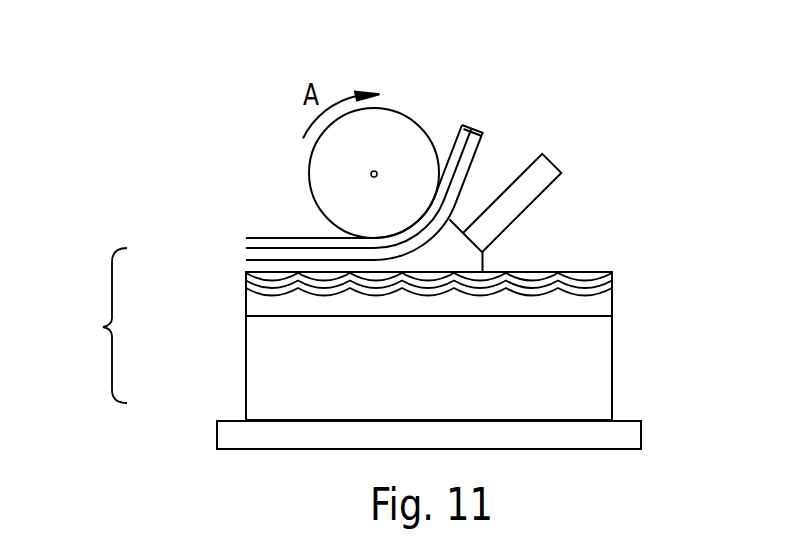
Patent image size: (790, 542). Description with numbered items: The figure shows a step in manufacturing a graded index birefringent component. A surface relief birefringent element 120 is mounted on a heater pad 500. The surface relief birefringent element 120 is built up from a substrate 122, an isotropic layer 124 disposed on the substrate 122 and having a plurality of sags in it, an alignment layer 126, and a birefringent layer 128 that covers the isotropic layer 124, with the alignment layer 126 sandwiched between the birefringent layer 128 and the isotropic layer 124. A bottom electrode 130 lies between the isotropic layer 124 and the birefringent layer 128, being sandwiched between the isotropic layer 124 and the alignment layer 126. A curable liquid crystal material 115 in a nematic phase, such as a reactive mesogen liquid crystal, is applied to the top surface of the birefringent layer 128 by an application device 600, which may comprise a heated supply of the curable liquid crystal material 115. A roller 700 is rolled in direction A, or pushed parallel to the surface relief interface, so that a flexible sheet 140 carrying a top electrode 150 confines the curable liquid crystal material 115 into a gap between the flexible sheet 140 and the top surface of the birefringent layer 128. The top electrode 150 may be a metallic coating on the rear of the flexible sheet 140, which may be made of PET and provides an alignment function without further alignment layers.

The roller 700 is at (412, 128).
The top electrode 150 is at (463, 122).
The flexible sheet 140 is at (482, 122).
The application device 600 is at (545, 172).
The curable liquid crystal material 115 is at (478, 263).
The bottom electrode 130 is at (612, 283).
The birefringent layer 128 is at (266, 272).
The alignment layer 126 is at (247, 277).
The isotropic layer 124 is at (262, 308).
The substrate 122 is at (262, 377).
The surface relief birefringent element 120 is at (84, 325).
The heater pad 500 is at (630, 435).